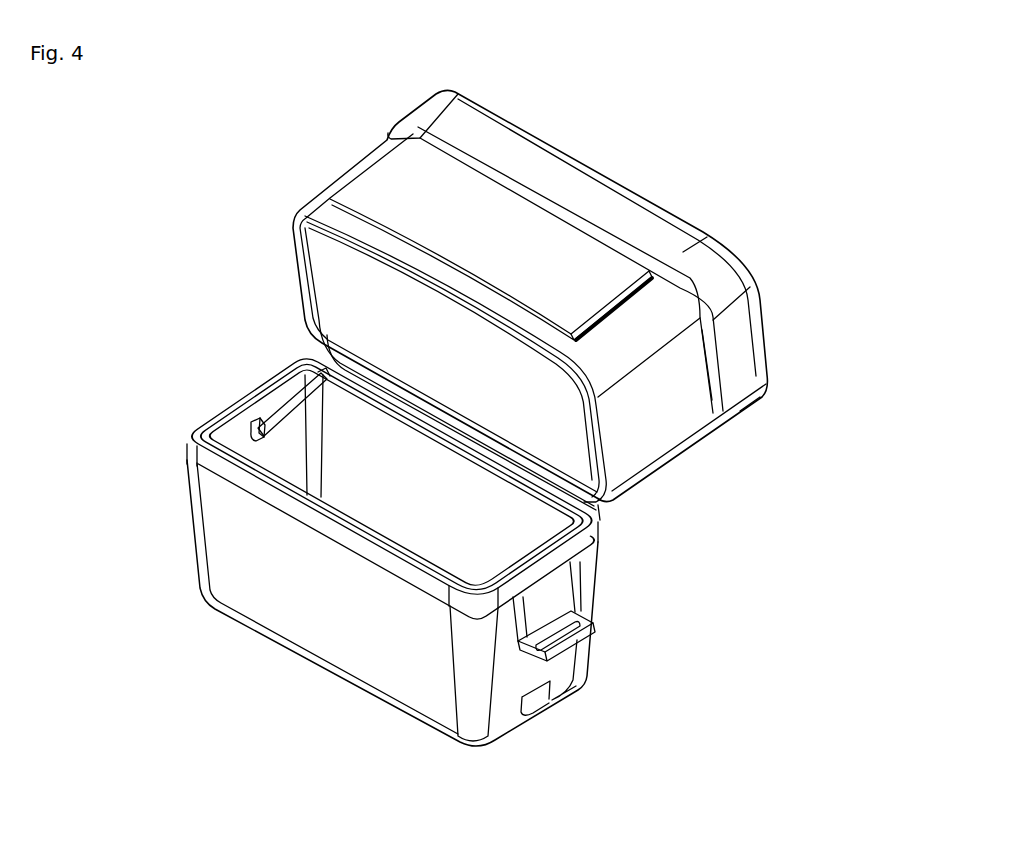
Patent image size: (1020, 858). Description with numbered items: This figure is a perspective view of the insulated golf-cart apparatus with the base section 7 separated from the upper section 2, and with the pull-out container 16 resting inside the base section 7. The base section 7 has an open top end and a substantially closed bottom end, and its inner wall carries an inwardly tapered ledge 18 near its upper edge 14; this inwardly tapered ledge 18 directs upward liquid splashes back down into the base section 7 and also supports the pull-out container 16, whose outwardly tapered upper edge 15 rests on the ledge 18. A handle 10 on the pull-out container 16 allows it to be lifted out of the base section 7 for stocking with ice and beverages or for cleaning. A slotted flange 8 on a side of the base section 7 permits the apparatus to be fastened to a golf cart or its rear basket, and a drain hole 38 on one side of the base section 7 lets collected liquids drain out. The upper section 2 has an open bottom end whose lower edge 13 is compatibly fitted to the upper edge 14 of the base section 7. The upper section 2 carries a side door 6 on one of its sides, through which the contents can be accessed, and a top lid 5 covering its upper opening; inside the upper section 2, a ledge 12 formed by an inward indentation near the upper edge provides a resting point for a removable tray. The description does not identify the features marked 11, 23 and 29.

The upper section 2 is at (670, 420).
The top lid 5 is at (637, 190).
The side door 6 is at (600, 273).
The base section 7 is at (273, 587).
The slotted flange 8 is at (587, 648).
The handle 10 is at (308, 378).
The container rim 11 is at (600, 548).
The ledge 12 is at (720, 423).
The lower edge 13 is at (292, 270).
The upper edge 14 is at (225, 460).
The outwardly tapered upper edge 15 is at (258, 398).
The pull-out container 16 is at (604, 509).
The inwardly tapered ledge 18 is at (214, 421).
The bracket slot 23 is at (572, 632).
The lever block 29 is at (248, 418).
The drain hole 38 is at (537, 717).